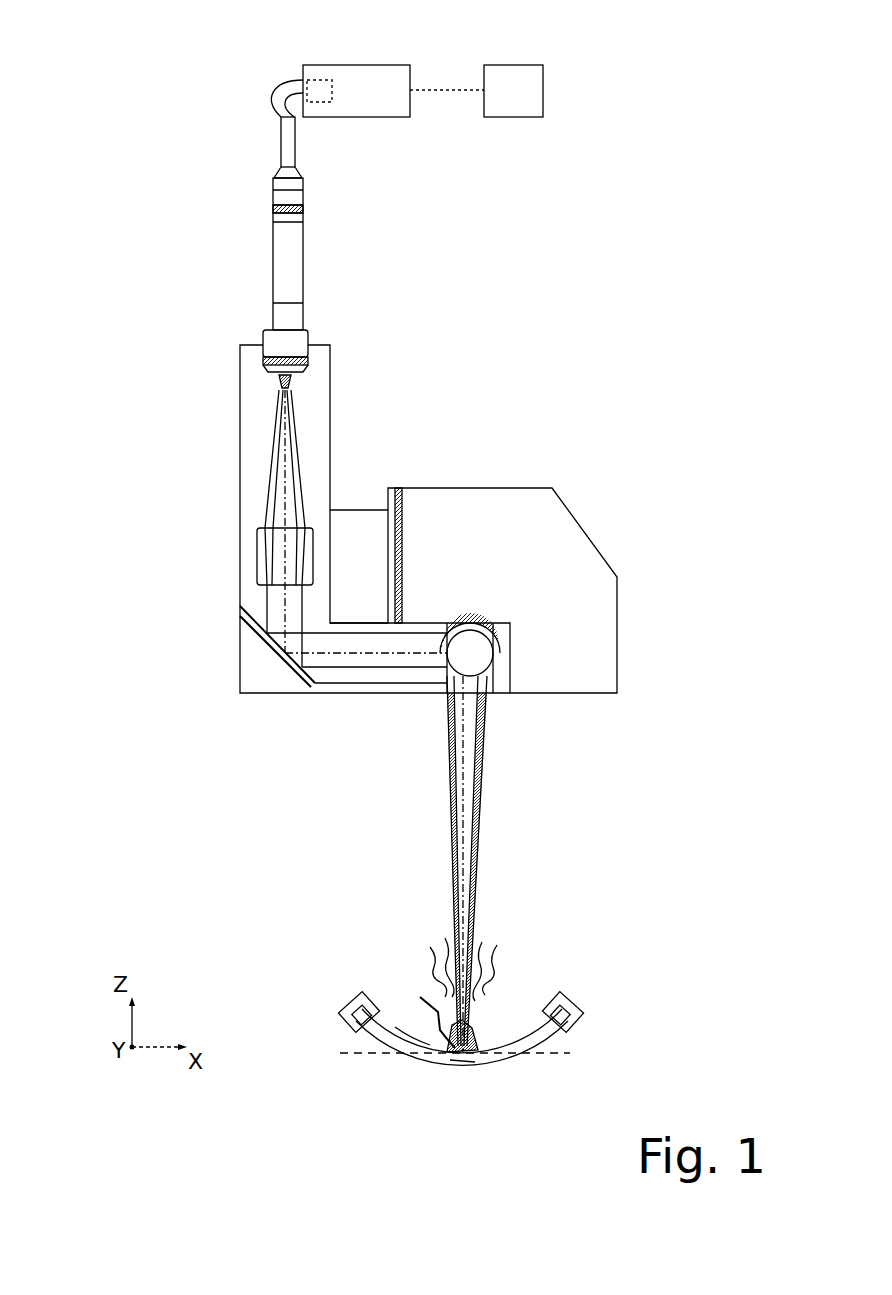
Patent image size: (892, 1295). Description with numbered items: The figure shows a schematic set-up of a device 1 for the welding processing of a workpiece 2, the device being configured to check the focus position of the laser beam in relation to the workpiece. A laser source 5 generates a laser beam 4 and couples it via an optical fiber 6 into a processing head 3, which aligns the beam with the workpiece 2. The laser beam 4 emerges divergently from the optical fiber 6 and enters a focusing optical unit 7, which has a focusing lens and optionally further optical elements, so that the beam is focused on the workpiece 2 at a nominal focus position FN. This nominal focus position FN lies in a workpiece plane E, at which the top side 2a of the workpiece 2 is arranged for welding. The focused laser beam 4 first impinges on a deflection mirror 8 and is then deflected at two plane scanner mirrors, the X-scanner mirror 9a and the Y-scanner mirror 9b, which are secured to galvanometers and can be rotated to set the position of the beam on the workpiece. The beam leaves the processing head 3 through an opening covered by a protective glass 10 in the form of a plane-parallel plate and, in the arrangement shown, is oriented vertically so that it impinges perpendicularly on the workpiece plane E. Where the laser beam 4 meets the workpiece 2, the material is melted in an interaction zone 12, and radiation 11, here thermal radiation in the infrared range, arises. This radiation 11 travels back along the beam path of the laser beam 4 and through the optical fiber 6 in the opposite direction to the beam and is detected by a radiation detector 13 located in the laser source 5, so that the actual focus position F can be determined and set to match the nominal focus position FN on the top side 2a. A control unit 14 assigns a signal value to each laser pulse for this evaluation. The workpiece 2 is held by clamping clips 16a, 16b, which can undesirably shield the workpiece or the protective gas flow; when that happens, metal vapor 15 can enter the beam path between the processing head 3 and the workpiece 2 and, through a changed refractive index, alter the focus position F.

The device 1 is at (170, 97).
The workpiece 2 is at (378, 1038).
The top side of the workpiece 2a is at (400, 1027).
The processing head 3 is at (595, 504).
The laser beam 4 is at (450, 805).
The laser source 5 is at (374, 105).
The optical fiber 6 is at (280, 143).
The focusing optical unit 7 is at (268, 562).
The deflection mirror 8 is at (280, 668).
The X-scanner mirror 9a is at (480, 662).
The Y-scanner mirror 9b is at (512, 648).
The protective glass 10 is at (427, 697).
The radiation 11 is at (448, 1030).
The interaction zone 12 is at (448, 1060).
The radiation detector 13 is at (320, 86).
The control unit 14 is at (513, 88).
The metal vapor 15 is at (480, 985).
The clamping clip 16a is at (336, 1016).
The clamping clip 16b is at (585, 1013).
The focus position F is at (472, 1023).
The nominal focus position FN is at (487, 1057).
The workpiece plane E is at (557, 1057).